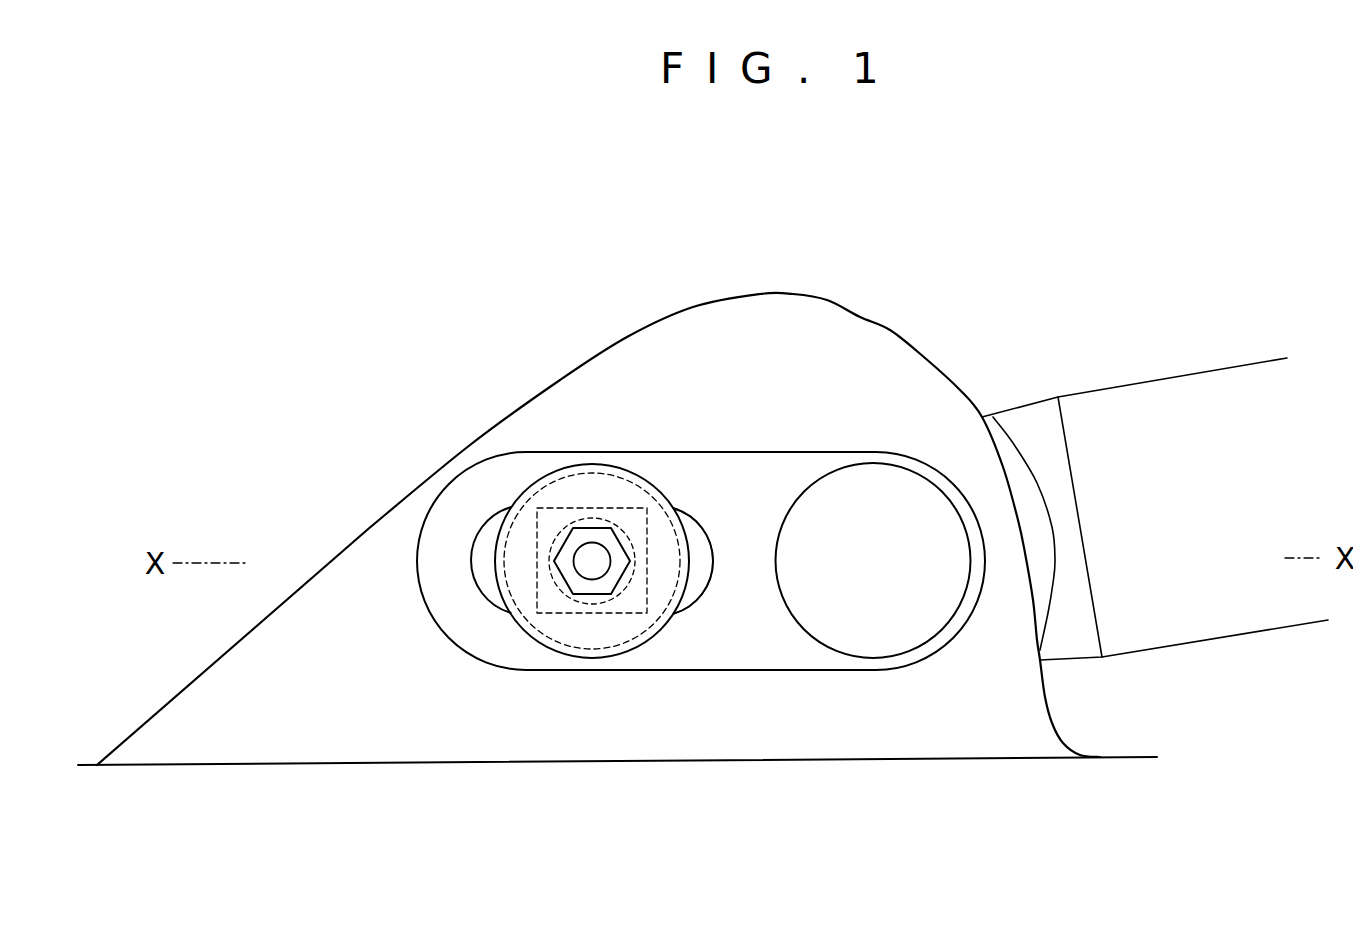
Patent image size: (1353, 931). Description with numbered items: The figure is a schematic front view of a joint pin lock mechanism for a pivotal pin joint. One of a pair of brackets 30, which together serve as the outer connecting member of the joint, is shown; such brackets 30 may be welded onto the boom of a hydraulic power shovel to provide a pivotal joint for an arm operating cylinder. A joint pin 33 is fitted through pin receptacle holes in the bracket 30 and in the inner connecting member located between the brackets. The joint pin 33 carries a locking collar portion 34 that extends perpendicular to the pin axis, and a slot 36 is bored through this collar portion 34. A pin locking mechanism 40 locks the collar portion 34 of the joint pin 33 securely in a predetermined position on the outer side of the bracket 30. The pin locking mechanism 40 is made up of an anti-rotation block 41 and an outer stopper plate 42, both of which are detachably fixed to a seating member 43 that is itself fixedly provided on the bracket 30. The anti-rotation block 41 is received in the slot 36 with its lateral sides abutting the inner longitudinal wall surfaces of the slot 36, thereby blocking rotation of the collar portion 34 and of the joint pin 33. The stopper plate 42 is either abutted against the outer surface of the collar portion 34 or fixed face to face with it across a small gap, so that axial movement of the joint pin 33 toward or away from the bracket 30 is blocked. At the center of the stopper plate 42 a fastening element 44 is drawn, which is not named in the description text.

The bracket 30 is at (838, 340).
The joint pin 33 is at (882, 490).
The locking collar portion 34 is at (692, 660).
The slot 36 is at (684, 567).
The pin locking mechanism 40 is at (523, 477).
The anti-rotation block 41 is at (547, 522).
The outer stopper plate 42 is at (583, 467).
The seating member 43 is at (565, 637).
The bolt 44 is at (593, 553).